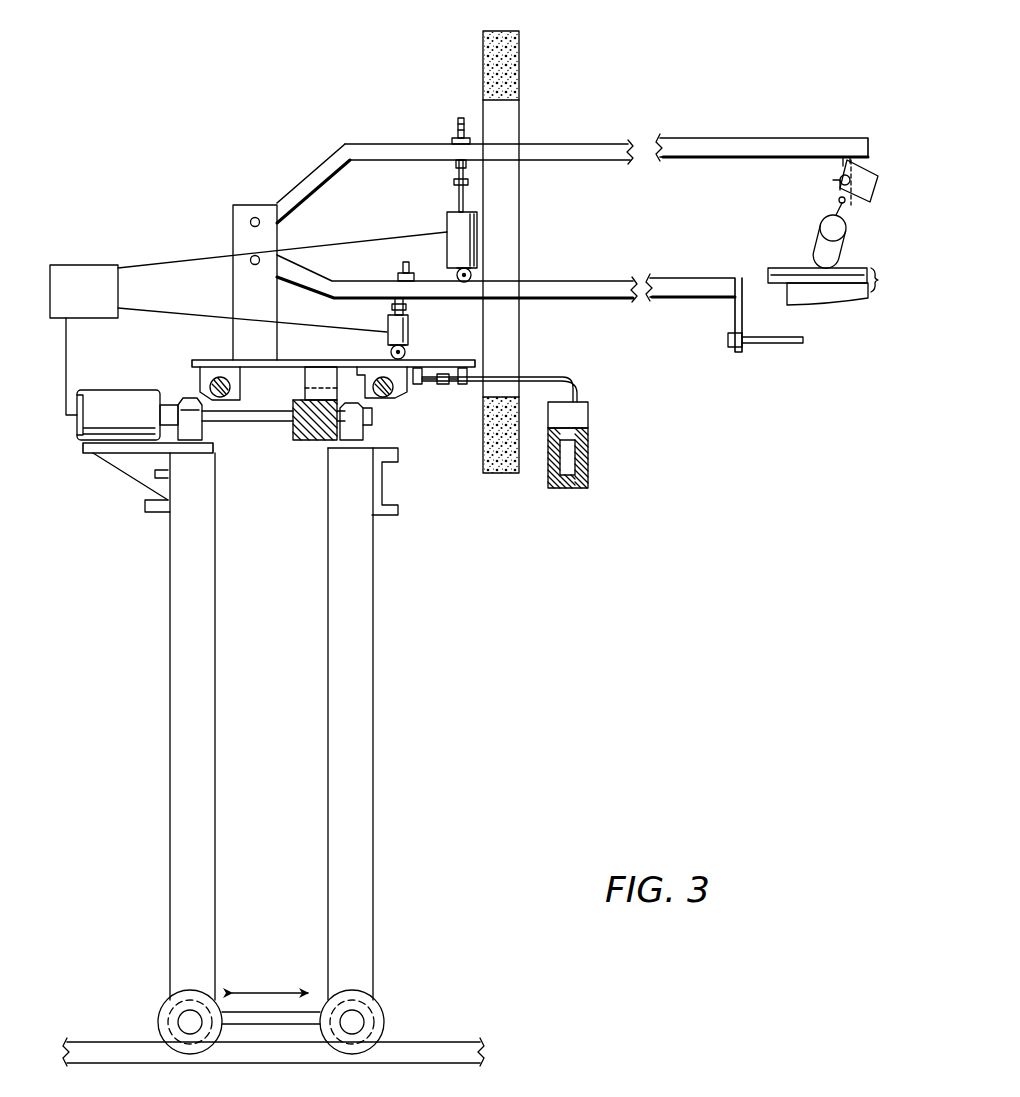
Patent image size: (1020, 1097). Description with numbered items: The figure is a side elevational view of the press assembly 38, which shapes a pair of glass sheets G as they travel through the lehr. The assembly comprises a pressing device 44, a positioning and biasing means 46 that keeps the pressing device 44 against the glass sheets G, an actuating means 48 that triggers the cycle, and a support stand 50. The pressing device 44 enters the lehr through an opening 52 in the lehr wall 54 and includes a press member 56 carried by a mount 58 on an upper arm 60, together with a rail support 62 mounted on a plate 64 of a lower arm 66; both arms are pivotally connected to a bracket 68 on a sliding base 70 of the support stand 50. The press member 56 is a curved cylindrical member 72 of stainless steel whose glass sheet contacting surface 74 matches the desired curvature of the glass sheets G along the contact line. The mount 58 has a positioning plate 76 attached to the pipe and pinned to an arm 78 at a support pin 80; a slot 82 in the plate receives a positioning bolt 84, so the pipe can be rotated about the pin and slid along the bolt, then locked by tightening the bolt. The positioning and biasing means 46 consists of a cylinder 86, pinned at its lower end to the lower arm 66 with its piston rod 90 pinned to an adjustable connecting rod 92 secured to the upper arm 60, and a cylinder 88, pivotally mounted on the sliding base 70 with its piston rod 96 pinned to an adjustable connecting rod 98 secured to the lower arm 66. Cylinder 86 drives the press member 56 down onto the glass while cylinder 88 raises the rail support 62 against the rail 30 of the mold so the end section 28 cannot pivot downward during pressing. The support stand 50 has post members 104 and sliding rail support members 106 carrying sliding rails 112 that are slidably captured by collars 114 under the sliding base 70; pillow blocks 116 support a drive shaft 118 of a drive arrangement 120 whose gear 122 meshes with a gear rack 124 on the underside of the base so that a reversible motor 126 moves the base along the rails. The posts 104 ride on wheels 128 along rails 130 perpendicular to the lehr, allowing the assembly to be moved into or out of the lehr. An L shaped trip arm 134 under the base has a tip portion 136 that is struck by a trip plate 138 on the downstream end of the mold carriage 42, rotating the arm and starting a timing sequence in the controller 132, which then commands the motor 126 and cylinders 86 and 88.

The press assembly 38 is at (324, 90).
The mold carriage 42 is at (592, 470).
The pressing device 44 is at (885, 118).
The positioning and biasing means 46 is at (497, 259).
The actuating means 48 is at (614, 436).
The support stand 50 is at (148, 643).
The opening 52 is at (520, 124).
The lehr wall 54 is at (482, 46).
The press member 56 is at (821, 224).
The mount 58 is at (862, 210).
The upper arm 60 is at (712, 138).
The rail support 62 is at (785, 346).
The plate 64 is at (735, 312).
The lower arm 66 is at (628, 302).
The bracket 68 is at (233, 284).
The sliding base 70 is at (302, 360).
The curved cylindrical member 72 is at (846, 240).
The glass sheet contacting surface 74 is at (819, 248).
The positioning plate 76 is at (875, 172).
The arm 78 is at (866, 157).
The support pin 80 is at (838, 199).
The slot 82 is at (878, 188).
The positioning bolt 84 is at (840, 178).
The cylinder 86 is at (447, 244).
The cylinder 88 is at (408, 333).
The piston rod 90 is at (456, 198).
The adjustable connecting rod 92 is at (458, 120).
The piston rod 96 is at (406, 310).
The adjustable connecting rod 98 is at (400, 266).
The post members 104 is at (328, 832).
The sliding rail support members 106 is at (160, 512).
The sliding rails 112 is at (212, 385).
The collars 114 is at (235, 396).
The pillow blocks 116 is at (202, 432).
The drive shaft 118 is at (268, 425).
The drive arrangement 120 is at (96, 478).
The gear 122 is at (312, 440).
The gear rack 124 is at (305, 376).
The motor 126 is at (130, 419).
The wheels 128 is at (383, 1008).
The rails 130 is at (445, 1040).
The controller 132 is at (100, 304).
The trip arm 134 is at (538, 378).
The tip portion 136 is at (590, 410).
The trip plate 138 is at (592, 430).
The end section 28 is at (833, 305).
The rail 30 is at (856, 292).
The glass sheets G is at (885, 281).